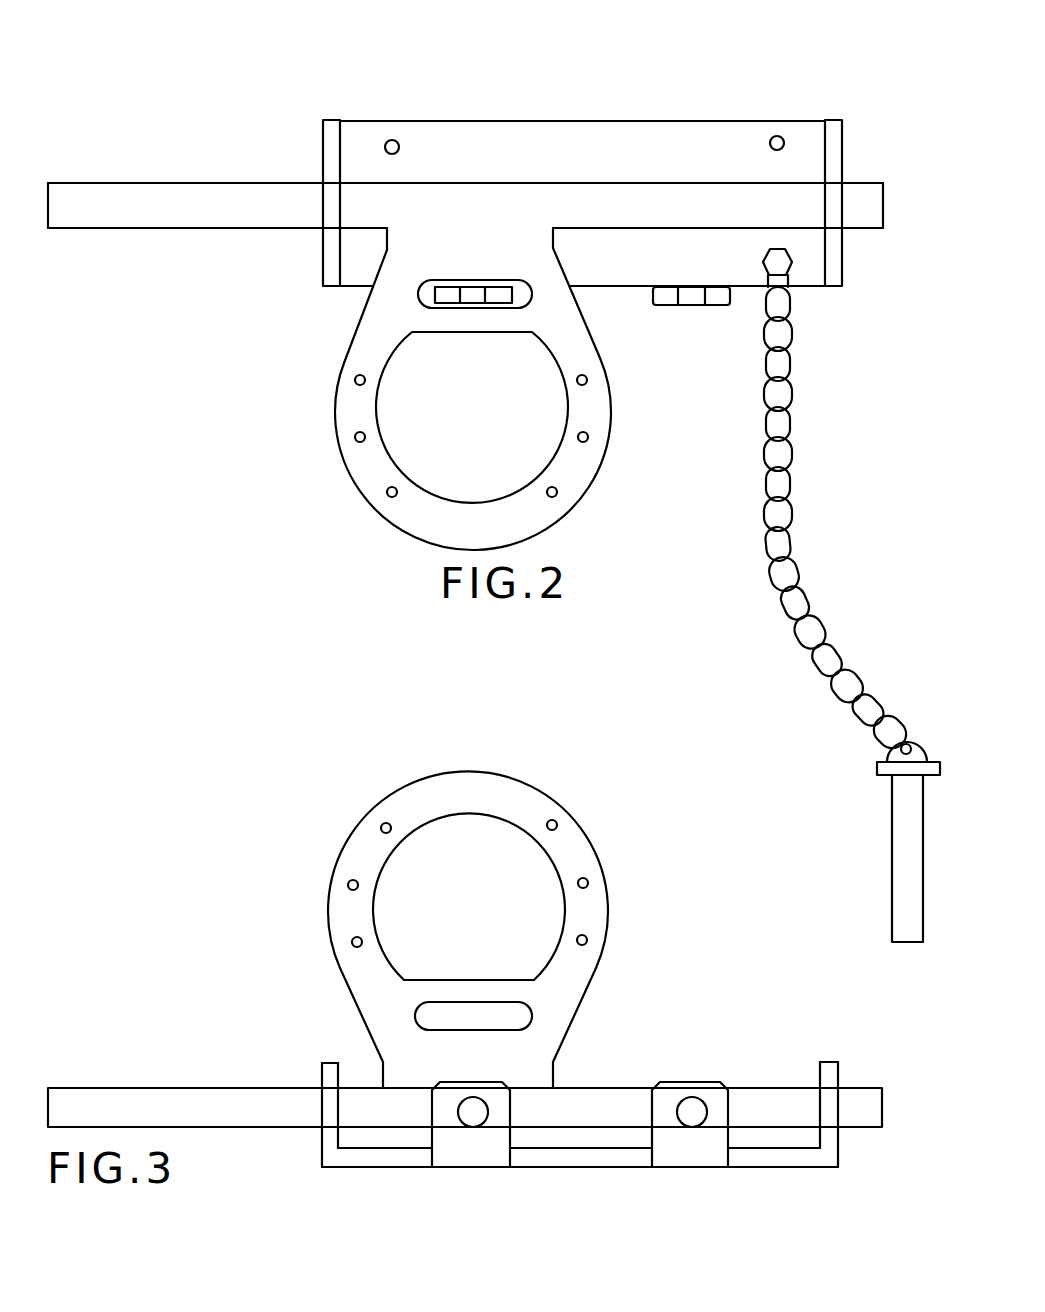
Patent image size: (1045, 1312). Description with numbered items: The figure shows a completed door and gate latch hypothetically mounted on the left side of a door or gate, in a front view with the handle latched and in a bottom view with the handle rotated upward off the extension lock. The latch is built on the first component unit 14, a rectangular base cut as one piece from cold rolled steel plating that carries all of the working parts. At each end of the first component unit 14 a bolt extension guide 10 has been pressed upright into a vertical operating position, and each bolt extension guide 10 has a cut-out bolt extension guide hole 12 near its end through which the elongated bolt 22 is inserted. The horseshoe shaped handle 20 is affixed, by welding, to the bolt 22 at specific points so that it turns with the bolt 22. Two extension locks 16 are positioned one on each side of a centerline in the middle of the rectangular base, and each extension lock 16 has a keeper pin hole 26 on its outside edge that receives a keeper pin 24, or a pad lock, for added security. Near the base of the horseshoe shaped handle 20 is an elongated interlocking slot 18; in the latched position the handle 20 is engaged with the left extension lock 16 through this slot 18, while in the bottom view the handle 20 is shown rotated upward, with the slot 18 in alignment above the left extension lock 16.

In FIG. 2, the bolt extension guide 10 is at (340, 121).
In FIG. 3, the bolt extension guide 10 is at (332, 1063).
In FIG. 2, the bolt extension guide hole 12 is at (843, 182).
In FIG. 3, the bolt extension guide hole 12 is at (830, 1090).
In FIG. 2, the first component unit 14 is at (802, 287).
In FIG. 3, the first component unit 14 is at (802, 1167).
In FIG. 2, the extension lock 16 is at (512, 293).
In FIG. 3, the extension lock 16 is at (670, 1168).
In FIG. 2, the elongated interlocking slot 18 is at (418, 300).
In FIG. 3, the elongated interlocking slot 18 is at (532, 1014).
In FIG. 2, the horseshoe shaped handle 20 is at (335, 422).
In FIG. 3, the horseshoe shaped handle 20 is at (344, 845).
In FIG. 2, the bolt 22 is at (243, 183).
In FIG. 3, the bolt 22 is at (184, 1088).
In FIG. 2, the keeper pin 24 is at (877, 770).
In FIG. 3, the keeper pin hole 26 is at (485, 1097).